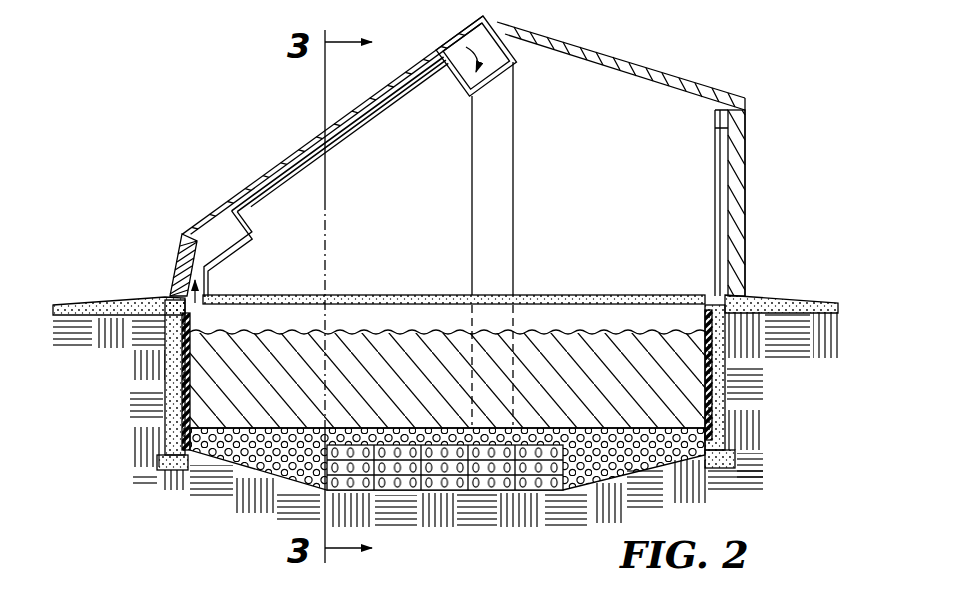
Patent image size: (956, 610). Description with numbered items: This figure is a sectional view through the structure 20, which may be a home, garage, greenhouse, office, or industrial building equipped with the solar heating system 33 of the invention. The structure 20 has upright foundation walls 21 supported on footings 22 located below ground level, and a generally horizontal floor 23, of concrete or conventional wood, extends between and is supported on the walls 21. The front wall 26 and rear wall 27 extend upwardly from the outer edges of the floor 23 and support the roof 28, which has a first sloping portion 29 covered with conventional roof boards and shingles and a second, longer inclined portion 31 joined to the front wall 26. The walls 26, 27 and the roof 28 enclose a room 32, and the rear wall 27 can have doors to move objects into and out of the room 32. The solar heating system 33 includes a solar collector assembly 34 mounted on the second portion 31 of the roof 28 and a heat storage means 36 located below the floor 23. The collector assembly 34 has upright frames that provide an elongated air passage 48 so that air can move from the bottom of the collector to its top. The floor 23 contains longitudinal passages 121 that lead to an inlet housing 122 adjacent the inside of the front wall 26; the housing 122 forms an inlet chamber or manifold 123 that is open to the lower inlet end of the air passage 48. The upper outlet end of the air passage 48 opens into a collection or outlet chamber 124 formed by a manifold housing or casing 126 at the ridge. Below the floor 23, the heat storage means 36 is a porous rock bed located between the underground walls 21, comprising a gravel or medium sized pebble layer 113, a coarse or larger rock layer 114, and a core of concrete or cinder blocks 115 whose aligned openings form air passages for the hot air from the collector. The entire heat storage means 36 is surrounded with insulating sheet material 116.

The structure 20 is at (748, 215).
The foundation walls 21 is at (740, 390).
The footings 22 is at (723, 467).
The floor 23 is at (642, 293).
The front wall 26 is at (177, 260).
The rear wall 27 is at (747, 157).
The roof 28 is at (632, 58).
The first sloping portion 29 is at (702, 87).
The second inclined portion 31 is at (361, 126).
The room 32 is at (623, 192).
The solar heating system 33 is at (220, 177).
The solar collector assembly 34 is at (300, 153).
The heat storage means 36 is at (398, 420).
The air passage 48 is at (388, 90).
The pebble layer 113 is at (622, 395).
The coarse rock layer 114 is at (635, 428).
The blocks 115 is at (503, 470).
The insulating sheet material 116 is at (163, 403).
The longitudinal passages 121 is at (410, 311).
The inlet housing 122 is at (233, 252).
The inlet chamber 123 is at (220, 230).
The outlet chamber 124 is at (473, 43).
The manifold housing 126 is at (457, 78).